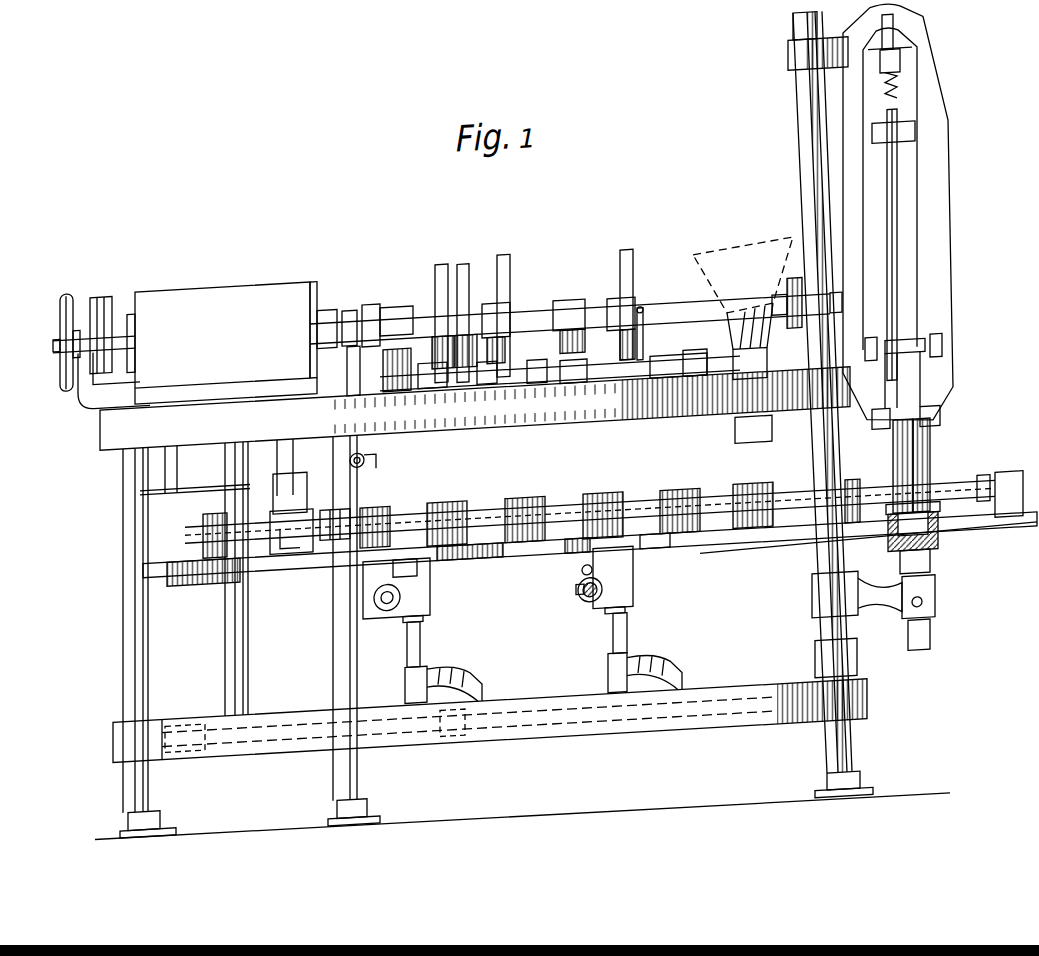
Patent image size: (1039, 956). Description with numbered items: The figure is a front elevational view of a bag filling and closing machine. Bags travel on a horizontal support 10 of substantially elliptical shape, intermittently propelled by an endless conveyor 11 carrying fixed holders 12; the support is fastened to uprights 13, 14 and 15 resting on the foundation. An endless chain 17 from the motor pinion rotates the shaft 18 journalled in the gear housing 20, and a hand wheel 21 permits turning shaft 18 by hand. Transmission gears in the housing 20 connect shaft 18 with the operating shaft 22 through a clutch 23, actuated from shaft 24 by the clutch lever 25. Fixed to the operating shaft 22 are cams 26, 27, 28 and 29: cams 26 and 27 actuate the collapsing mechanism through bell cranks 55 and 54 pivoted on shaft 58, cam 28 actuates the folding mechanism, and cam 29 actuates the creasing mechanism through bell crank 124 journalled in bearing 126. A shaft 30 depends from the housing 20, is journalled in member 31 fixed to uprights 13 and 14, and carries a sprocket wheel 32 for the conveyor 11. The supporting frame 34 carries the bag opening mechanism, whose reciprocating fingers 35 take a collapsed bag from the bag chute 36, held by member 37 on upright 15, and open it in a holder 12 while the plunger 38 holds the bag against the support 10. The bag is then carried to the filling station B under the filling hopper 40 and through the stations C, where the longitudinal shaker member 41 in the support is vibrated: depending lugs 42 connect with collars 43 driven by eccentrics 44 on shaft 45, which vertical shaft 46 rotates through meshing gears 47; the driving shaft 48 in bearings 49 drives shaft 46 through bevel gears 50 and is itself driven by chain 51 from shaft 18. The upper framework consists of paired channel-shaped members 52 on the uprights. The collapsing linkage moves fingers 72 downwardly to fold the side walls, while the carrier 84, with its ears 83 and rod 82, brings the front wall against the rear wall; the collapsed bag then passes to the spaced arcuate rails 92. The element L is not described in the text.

The horizontal support 10 is at (506, 586).
The endless conveyor 11 is at (558, 538).
The holders 12 is at (665, 530).
The upright 13 is at (123, 594).
The upright 14 is at (333, 614).
The upright 15 is at (812, 610).
The endless chain 17 is at (101, 303).
The shaft 18 is at (131, 322).
The gear housing 20 is at (210, 300).
The hand wheel 21 is at (66, 298).
The operating shaft 22 is at (548, 342).
The clutch 23 is at (348, 329).
The shaft 24 is at (366, 481).
The clutch lever 25 is at (351, 396).
The cam 26 is at (440, 290).
The cam 27 is at (463, 291).
The cam 28 is at (504, 284).
The cam 29 is at (628, 286).
The shaft 30 is at (225, 614).
The member 31 is at (202, 729).
The sprocket wheel 32 is at (203, 535).
The supporting frame 34 is at (950, 263).
The fingers 35 is at (928, 505).
The bag chute 36 is at (941, 472).
The member 37 is at (935, 600).
The plunger 38 is at (900, 336).
The filling hopper 40 is at (746, 290).
The longitudinal member 41 is at (665, 586).
The depending lug 42 is at (582, 604).
The collar 43 is at (578, 624).
The eccentric 44 is at (584, 630).
The shaft 45 is at (587, 634).
The vertical shaft 46 is at (420, 669).
The meshing gears 47 is at (430, 613).
The driving shaft 48 is at (435, 769).
The bearings 49 is at (205, 769).
The bevel gears 50 is at (620, 769).
The chain 51 is at (123, 547).
The channel-shaped members 52 is at (535, 456).
The bell crank 54 is at (440, 413).
The bell crank 55 is at (488, 412).
The shaft 58 is at (652, 416).
The finger 72 is at (272, 490).
The rod 82 is at (307, 512).
The ears 83 is at (338, 529).
The carrier 84 is at (288, 570).
The spaced rails 92 is at (203, 498).
The bell crank 124 is at (643, 369).
The bearing 126 is at (574, 416).
The bag filling station B is at (754, 527).
The stations C is at (603, 515).
The end block L is at (1004, 480).